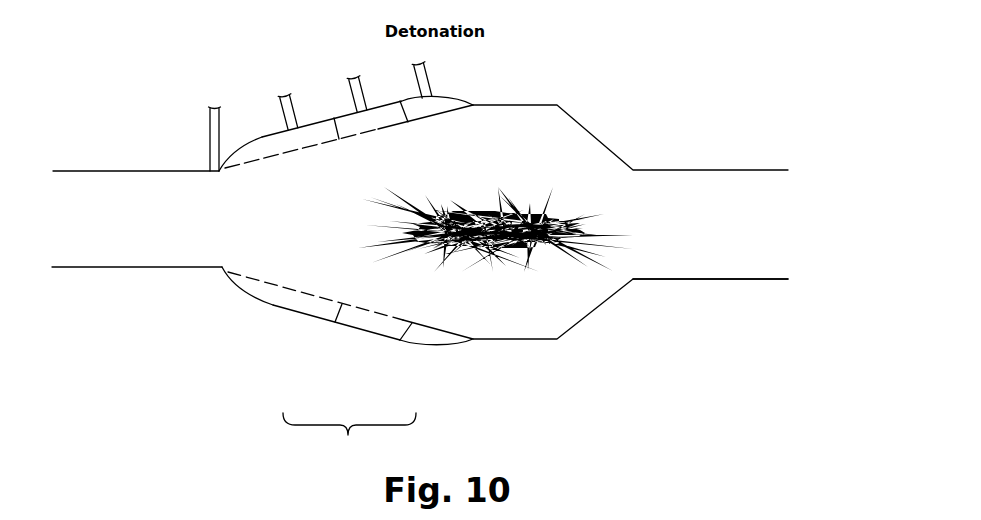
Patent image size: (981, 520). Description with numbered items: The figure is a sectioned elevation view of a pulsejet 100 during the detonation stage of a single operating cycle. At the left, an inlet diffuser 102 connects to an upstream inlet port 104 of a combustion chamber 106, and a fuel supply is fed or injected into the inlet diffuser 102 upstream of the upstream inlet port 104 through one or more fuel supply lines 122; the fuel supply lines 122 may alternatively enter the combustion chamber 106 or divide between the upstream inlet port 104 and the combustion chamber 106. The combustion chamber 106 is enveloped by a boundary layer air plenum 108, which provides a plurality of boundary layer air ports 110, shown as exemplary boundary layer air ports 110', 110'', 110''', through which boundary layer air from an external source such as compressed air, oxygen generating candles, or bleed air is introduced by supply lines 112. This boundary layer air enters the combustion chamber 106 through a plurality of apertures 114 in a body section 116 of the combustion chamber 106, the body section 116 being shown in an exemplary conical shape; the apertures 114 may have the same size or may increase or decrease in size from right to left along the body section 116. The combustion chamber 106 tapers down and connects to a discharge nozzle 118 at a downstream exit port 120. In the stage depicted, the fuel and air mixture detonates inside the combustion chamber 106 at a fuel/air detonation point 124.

The pulsejet 100 is at (203, 63).
The inlet diffuser 102 is at (177, 270).
The upstream inlet port 104 is at (233, 243).
The combustion chamber 106 is at (312, 252).
The boundary layer air plenum 108 is at (307, 320).
The boundary layer air ports 110 is at (349, 437).
The boundary layer air port 110' is at (431, 363).
The boundary layer air port 110'' is at (373, 366).
The boundary layer air port 110''' is at (314, 348).
The supply lines 112 is at (281, 107).
The apertures 114 is at (228, 160).
The body section 116 is at (317, 143).
The discharge nozzle 118 is at (742, 279).
The downstream exit port 120 is at (635, 242).
The fuel supply lines 122 is at (213, 137).
The fuel/air detonation point 124 is at (503, 250).